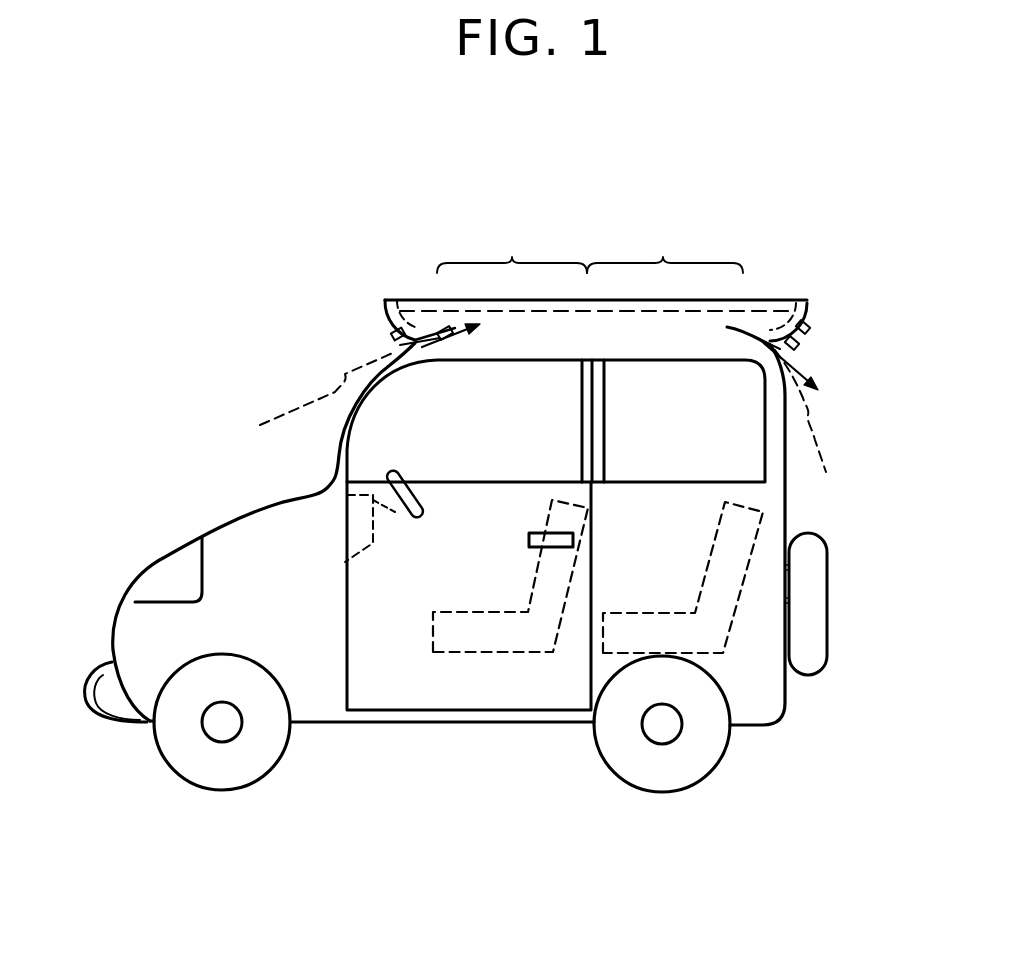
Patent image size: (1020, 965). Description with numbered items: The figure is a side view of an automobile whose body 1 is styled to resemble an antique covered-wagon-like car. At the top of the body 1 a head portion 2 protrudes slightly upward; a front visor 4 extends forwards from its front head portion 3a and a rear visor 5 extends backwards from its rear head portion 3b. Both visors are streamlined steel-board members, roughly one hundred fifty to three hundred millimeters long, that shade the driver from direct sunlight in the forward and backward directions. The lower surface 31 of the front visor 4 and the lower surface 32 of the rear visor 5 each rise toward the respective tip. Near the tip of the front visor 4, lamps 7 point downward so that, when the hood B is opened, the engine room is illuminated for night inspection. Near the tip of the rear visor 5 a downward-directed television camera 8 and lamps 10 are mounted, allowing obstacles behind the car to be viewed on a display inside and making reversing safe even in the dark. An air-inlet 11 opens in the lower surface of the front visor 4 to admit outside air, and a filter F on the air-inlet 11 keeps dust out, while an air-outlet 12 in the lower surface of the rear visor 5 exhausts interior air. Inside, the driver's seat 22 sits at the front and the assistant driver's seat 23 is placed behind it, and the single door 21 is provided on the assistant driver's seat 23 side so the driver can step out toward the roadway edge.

The body 1 is at (368, 598).
The hood B is at (272, 446).
The head portion 2 is at (775, 110).
The front head portion 3a is at (512, 257).
The rear head portion 3b is at (663, 258).
The front visor 4 is at (399, 306).
The rear visor 5 is at (805, 300).
The lamps 7 is at (398, 338).
The lower surface 31 is at (388, 320).
The filter F is at (432, 322).
The television camera 8 is at (815, 371).
The lamps 10 is at (800, 340).
The lower surface 32 is at (808, 320).
The air-inlet 11 is at (308, 400).
The air-outlet 12 is at (815, 429).
The door 21 is at (483, 587).
The driver's seat 22 is at (518, 637).
The assistant driver's seat 23 is at (713, 640).